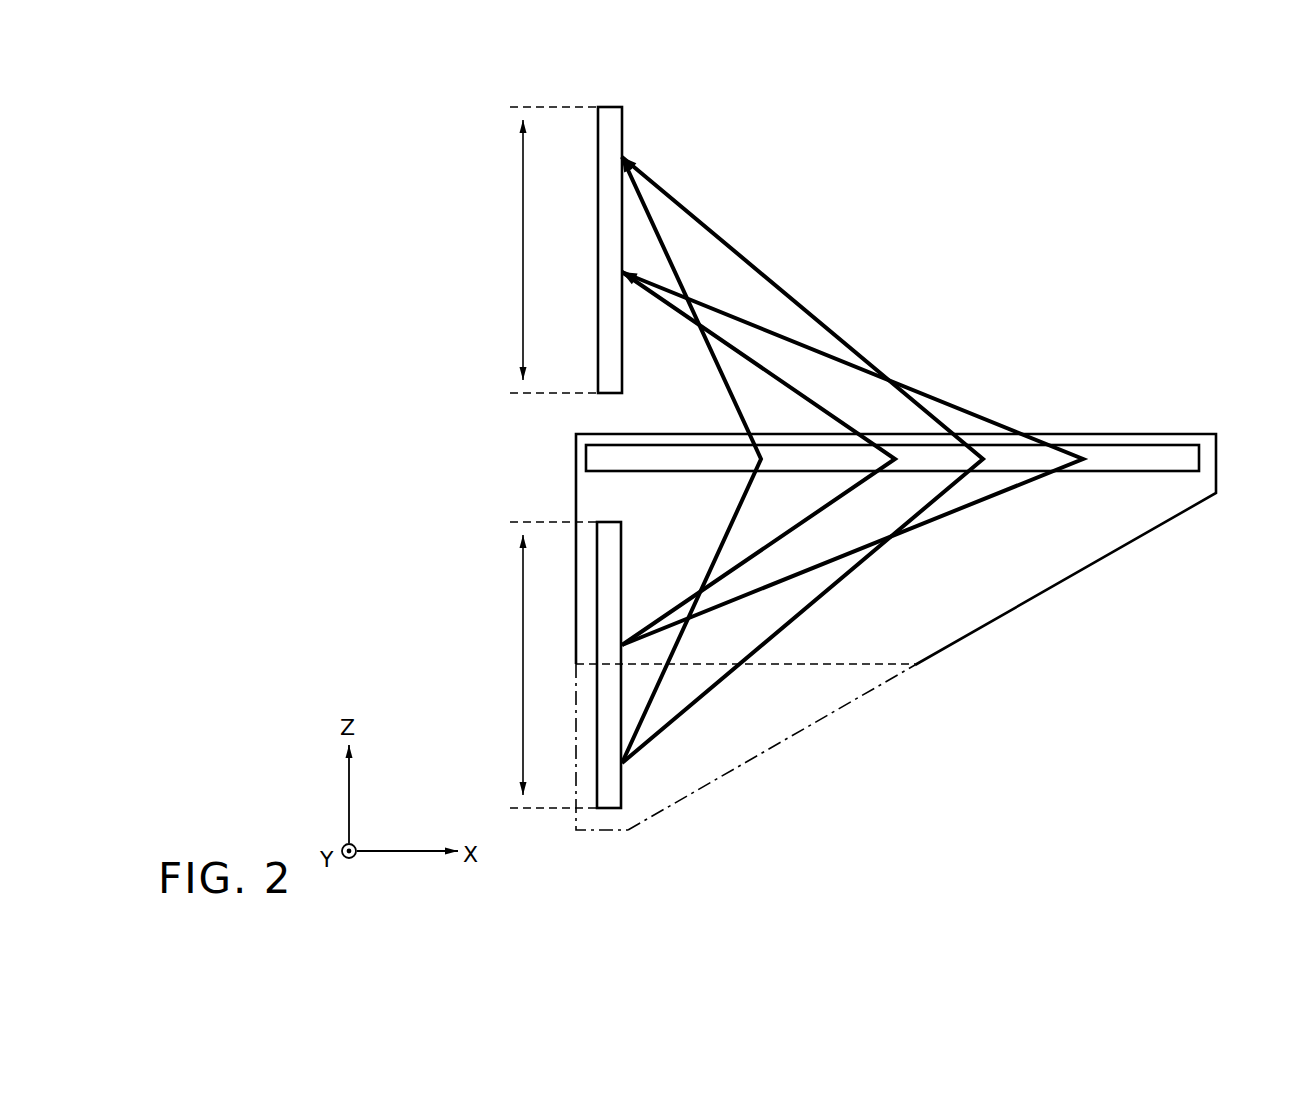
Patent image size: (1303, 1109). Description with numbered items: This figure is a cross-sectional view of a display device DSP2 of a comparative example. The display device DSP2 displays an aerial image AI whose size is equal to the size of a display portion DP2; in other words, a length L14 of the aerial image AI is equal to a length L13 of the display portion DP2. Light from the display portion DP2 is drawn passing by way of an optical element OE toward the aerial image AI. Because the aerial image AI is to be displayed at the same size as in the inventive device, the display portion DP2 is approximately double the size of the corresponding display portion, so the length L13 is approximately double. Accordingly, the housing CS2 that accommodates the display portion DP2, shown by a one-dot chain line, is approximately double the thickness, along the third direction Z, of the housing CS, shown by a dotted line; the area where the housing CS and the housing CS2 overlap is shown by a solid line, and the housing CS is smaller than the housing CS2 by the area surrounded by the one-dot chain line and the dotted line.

The display device DSP2 is at (1167, 620).
The optical element OE is at (1140, 455).
The aerial image AI is at (606, 151).
The display portion DP2 is at (607, 798).
The housing CS is at (838, 665).
The housing CS2 is at (752, 762).
The length of the aerial image L14 is at (540, 250).
The length of the display portion L13 is at (540, 665).